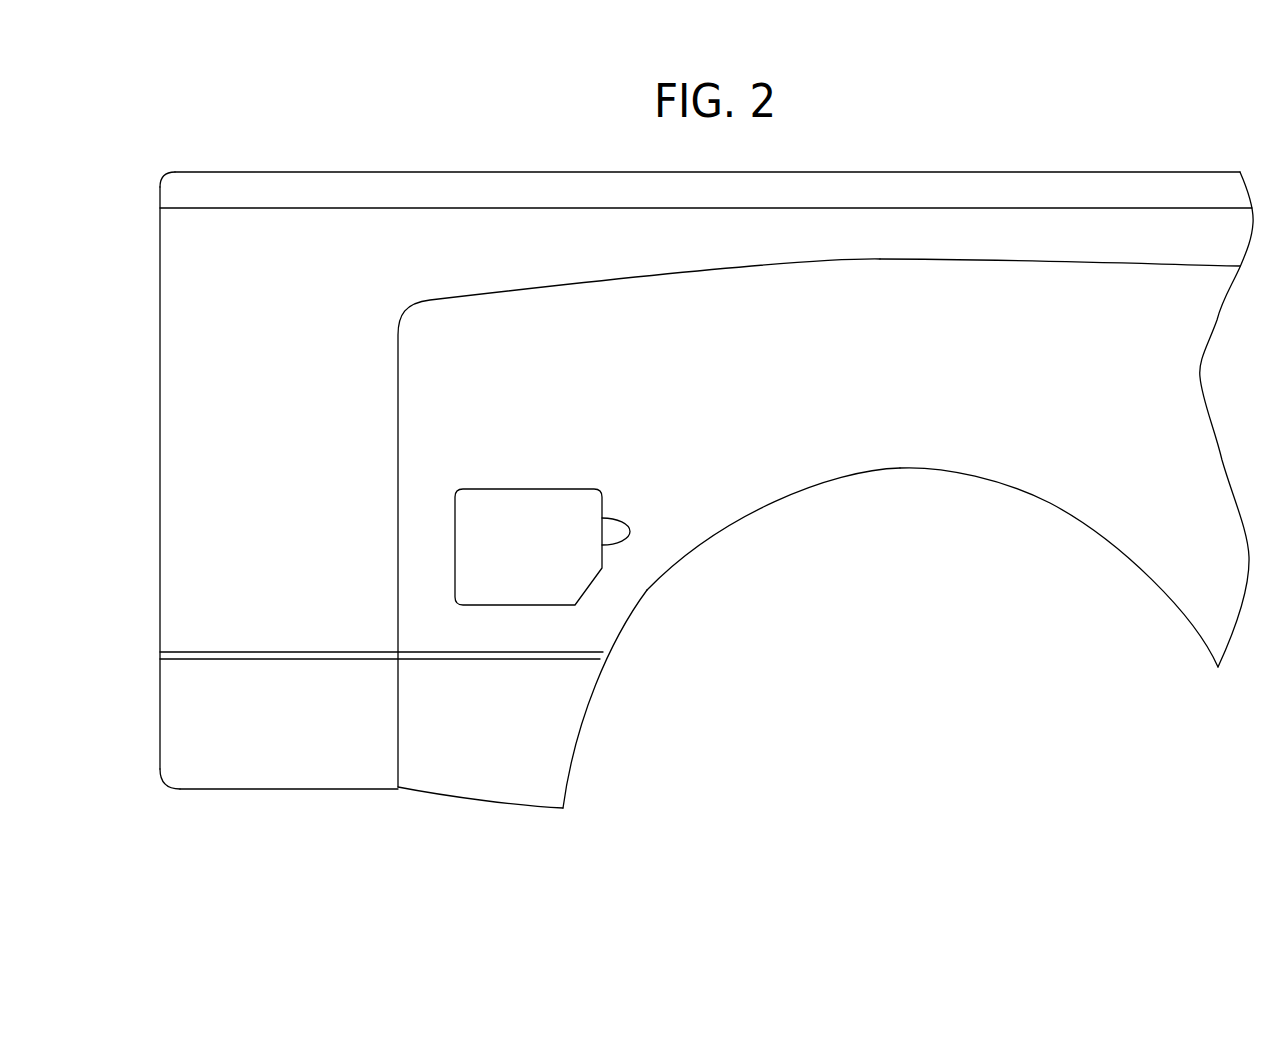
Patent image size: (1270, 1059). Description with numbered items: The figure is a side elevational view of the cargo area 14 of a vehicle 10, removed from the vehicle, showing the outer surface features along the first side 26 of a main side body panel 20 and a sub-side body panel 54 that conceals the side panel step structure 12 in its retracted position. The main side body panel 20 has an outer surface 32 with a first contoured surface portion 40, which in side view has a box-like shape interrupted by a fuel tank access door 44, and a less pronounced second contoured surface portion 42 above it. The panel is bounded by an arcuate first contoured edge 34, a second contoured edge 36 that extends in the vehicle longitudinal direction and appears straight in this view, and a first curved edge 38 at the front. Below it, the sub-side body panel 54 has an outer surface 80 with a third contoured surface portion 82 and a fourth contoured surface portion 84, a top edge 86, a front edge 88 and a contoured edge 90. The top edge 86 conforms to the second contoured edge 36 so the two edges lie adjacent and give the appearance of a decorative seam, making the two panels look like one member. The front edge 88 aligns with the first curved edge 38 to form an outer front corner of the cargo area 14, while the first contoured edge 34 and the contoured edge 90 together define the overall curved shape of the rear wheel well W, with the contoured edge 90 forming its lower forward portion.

The vehicle 10 is at (1067, 79).
The side panel step structure 12 is at (268, 757).
The cargo area 14 is at (981, 166).
The main side body panel 20 is at (542, 246).
The first side 26 is at (876, 192).
The outer surface 32 is at (320, 227).
The first contoured edge 34 is at (647, 590).
The second contoured edge 36 is at (323, 653).
The first curved edge 38 is at (160, 430).
The first contoured surface portion 40 is at (727, 452).
The second contoured surface portion 42 is at (206, 247).
The fuel tank access door 44 is at (521, 530).
The sub-side body panel 54 is at (497, 773).
The outer surface 80 is at (427, 753).
The third contoured surface portion 82 is at (520, 728).
The fourth contoured surface portion 84 is at (207, 703).
The top edge 86 is at (242, 659).
The front edge 88 is at (159, 734).
The contoured edge 90 is at (587, 695).
The rear wheel well W is at (963, 473).